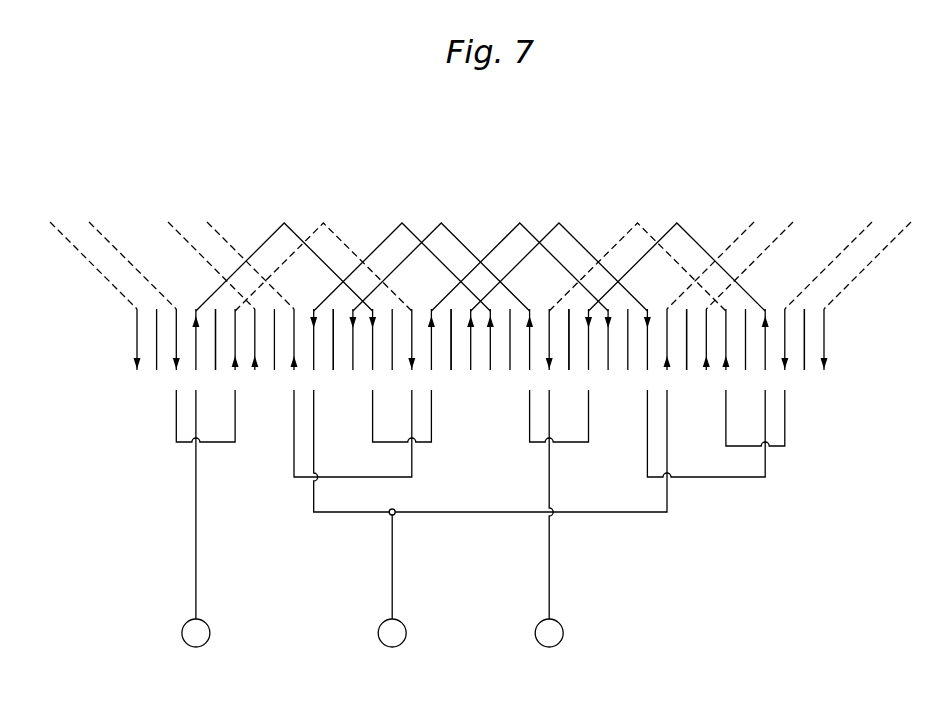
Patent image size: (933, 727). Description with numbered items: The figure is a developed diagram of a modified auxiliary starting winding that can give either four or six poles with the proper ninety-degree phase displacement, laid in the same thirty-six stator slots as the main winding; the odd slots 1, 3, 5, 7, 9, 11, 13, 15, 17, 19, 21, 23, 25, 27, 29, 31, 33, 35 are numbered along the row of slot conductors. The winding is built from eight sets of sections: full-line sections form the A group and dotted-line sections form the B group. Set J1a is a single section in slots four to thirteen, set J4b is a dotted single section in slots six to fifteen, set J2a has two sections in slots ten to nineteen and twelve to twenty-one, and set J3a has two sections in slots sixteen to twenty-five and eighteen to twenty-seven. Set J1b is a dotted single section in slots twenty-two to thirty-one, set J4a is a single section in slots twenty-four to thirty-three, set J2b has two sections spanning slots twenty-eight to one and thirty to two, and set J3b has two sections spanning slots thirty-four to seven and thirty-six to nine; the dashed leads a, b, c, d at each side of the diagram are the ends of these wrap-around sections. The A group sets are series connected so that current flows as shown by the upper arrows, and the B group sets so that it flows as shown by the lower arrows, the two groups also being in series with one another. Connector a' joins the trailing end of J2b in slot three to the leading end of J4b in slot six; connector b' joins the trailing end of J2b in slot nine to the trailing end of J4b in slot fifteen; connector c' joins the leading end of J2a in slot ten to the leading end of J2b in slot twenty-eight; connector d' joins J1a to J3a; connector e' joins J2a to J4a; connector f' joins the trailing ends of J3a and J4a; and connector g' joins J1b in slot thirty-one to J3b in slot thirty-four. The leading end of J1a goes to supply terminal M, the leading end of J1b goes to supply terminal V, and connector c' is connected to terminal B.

The slot 1 is at (137, 347).
The slot 3 is at (176, 347).
The slot 5 is at (215, 347).
The slot 7 is at (254, 347).
The slot 9 is at (294, 347).
The slot 11 is at (333, 347).
The slot 13 is at (373, 347).
The slot 15 is at (412, 347).
The slot 17 is at (451, 347).
The slot 19 is at (490, 347).
The slot 21 is at (530, 347).
The slot 23 is at (569, 347).
The slot 25 is at (608, 347).
The slot 27 is at (647, 347).
The slot 29 is at (687, 347).
The slot 31 is at (726, 347).
The slot 33 is at (765, 347).
The slot 35 is at (804, 347).
The first set J1a is at (284, 241).
The set of the B group J4b is at (323, 241).
The third set J2a is at (422, 241).
The fourth set J3a is at (539, 241).
The fifth set J1b is at (677, 241).
The sixth set J4a is at (637, 241).
The seventh set J2b is at (780, 180).
The eighth set J3b is at (891, 180).
The phase lead a is at (405, 256).
The phase lead b is at (443, 256).
The phase lead c is at (519, 256).
The phase lead d is at (560, 256).
The connector a' is at (205, 416).
The connector b' is at (353, 433).
The connector c' is at (490, 452).
The connector d' is at (402, 416).
The connector e' is at (559, 416).
The connector f' is at (706, 433).
The connector g' is at (755, 418).
The supply terminal M is at (196, 518).
The terminal B is at (392, 581).
The supply terminal V is at (549, 518).